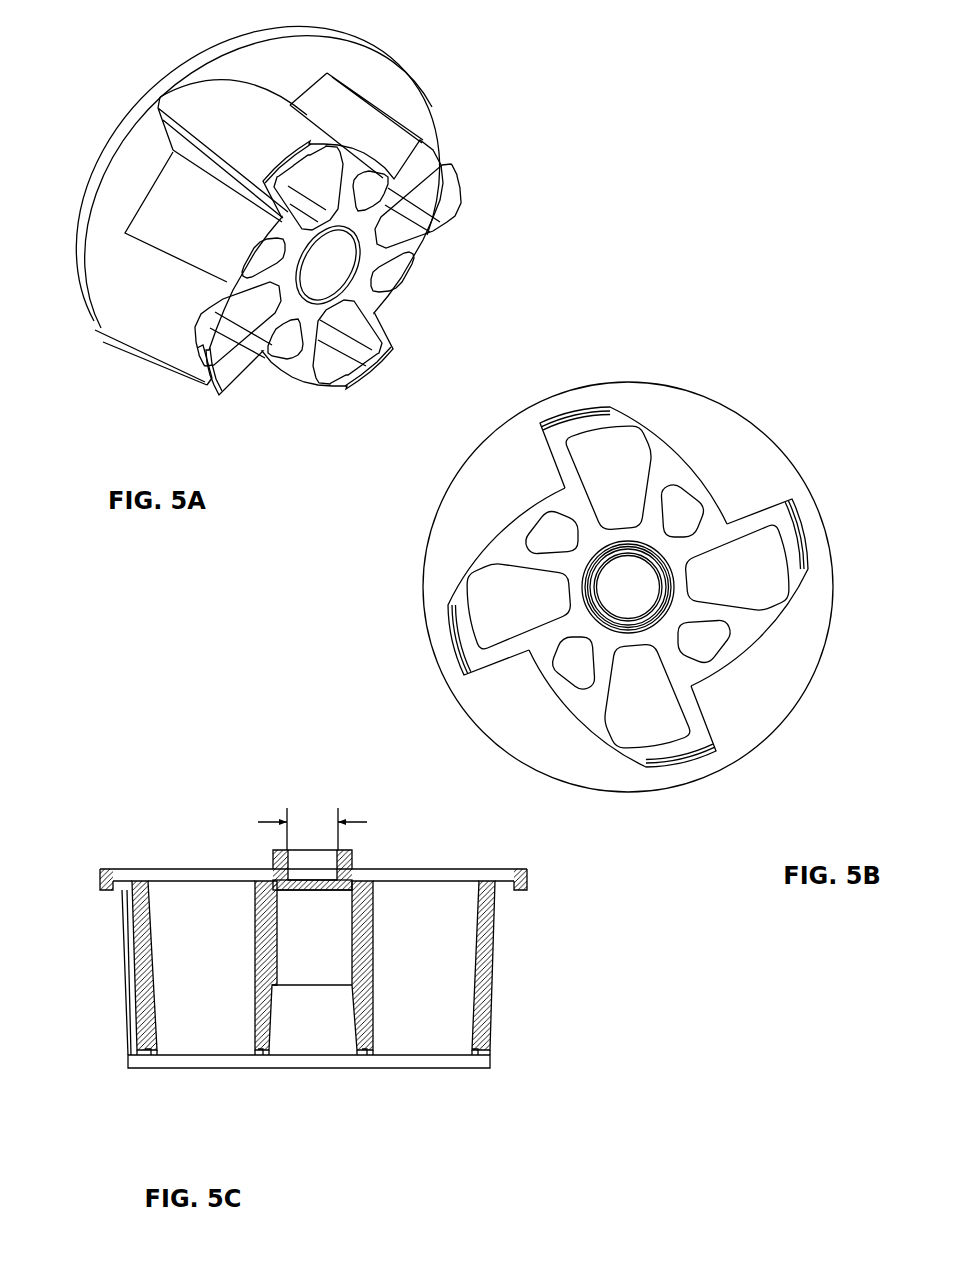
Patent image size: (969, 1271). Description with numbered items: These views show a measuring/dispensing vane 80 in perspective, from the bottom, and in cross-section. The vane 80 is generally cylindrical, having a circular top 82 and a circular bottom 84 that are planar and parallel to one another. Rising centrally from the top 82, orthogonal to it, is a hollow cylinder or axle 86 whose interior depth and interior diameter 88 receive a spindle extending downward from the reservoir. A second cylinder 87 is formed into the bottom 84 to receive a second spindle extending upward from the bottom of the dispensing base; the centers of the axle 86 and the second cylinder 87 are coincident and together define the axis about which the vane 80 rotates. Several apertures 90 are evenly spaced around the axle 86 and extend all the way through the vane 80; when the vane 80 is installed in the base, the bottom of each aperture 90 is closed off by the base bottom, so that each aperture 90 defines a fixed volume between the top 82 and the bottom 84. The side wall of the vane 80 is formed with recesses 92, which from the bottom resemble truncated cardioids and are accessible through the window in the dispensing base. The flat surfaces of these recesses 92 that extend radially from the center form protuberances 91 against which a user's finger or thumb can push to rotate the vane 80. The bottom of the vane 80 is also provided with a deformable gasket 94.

In FIG. 5B, the measuring/dispensing vane 80 is at (663, 99).
In FIG. 5C, the top 82 is at (176, 868).
In FIG. 5A, the bottom 84 is at (324, 267).
In FIG. 5B, the bottom 84 is at (589, 587).
In FIG. 5C, the bottom 84 is at (466, 1070).
In FIG. 5C, the cylinder or hollow axle 86 is at (357, 855).
In FIG. 5A, the second cylinder 87 is at (330, 266).
In FIG. 5B, the second cylinder 87 is at (628, 587).
In FIG. 5C, the second cylinder 87 is at (318, 1072).
In FIG. 5C, the interior diameter 88 is at (281, 819).
In FIG. 5A, the apertures 90 is at (405, 206).
In FIG. 5B, the apertures 90 is at (630, 591).
In FIG. 5C, the apertures 90 is at (451, 978).
In FIG. 5A, the protuberances 91 is at (187, 94).
In FIG. 5B, the protuberances 91 is at (628, 590).
In FIG. 5A, the recesses 92 is at (309, 58).
In FIG. 5B, the recesses 92 is at (773, 466).
In FIG. 5A, the deformable gasket 94 is at (424, 140).